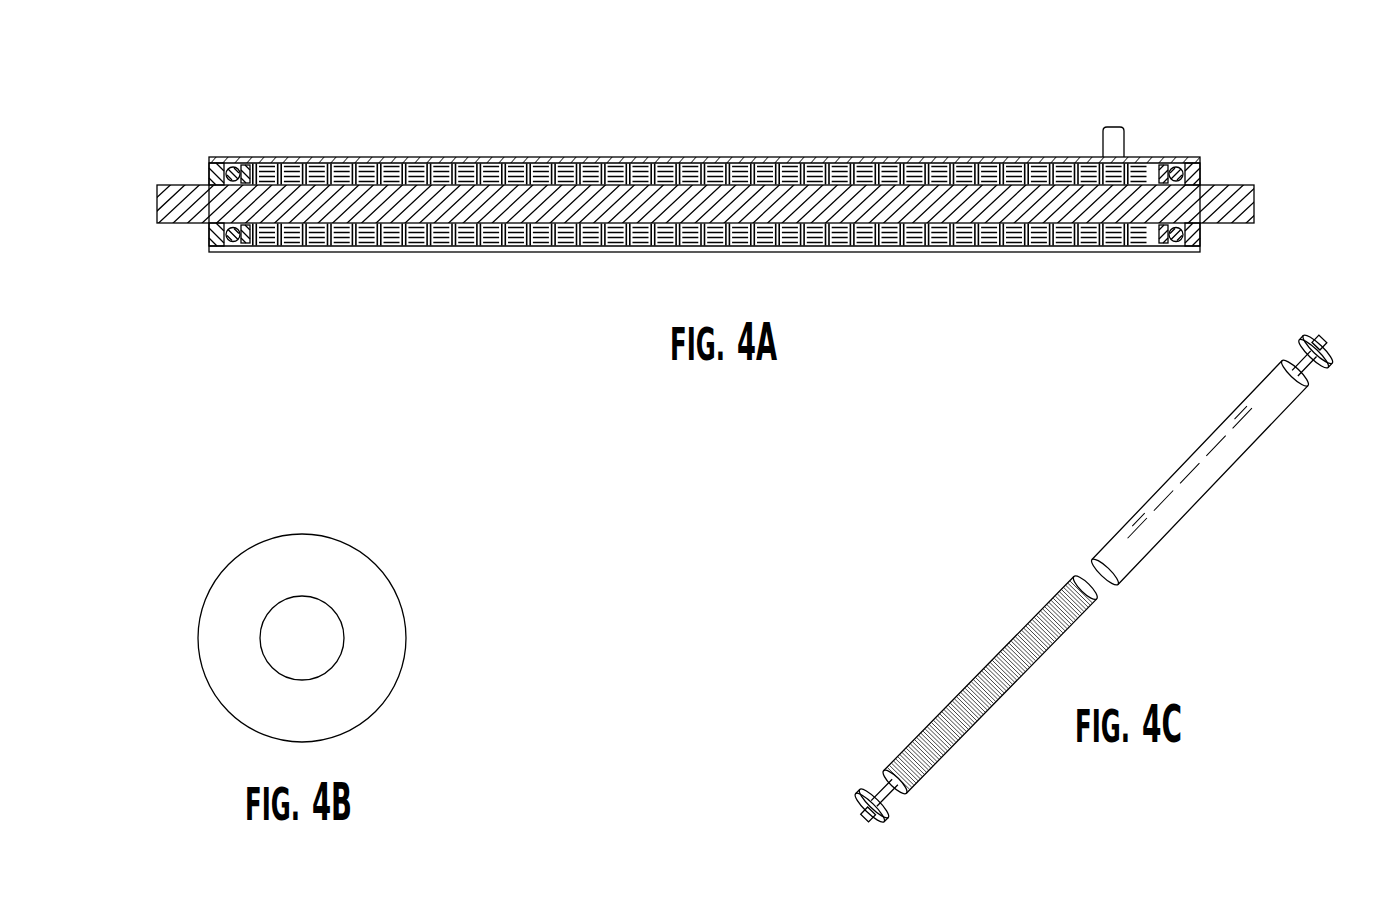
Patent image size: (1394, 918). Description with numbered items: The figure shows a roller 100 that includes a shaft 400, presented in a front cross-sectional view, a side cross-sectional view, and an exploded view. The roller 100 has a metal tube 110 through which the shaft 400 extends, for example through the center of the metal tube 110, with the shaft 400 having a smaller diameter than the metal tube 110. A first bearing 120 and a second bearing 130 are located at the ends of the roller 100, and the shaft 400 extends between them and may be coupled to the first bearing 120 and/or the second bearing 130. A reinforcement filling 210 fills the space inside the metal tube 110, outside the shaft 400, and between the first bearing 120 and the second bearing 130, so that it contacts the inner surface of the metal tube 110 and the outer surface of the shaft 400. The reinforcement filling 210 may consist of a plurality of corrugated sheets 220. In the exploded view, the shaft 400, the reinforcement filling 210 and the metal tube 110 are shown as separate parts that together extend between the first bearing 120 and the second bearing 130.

In FIG. 4A, the roller 100 is at (49, 63).
In FIG. 4A, the metal tube 110 is at (563, 157).
In FIG. 4B, the metal tube 110 is at (272, 536).
In FIG. 4C, the metal tube 110 is at (1118, 523).
In FIG. 4A, the first bearing 120 is at (209, 176).
In FIG. 4C, the first bearing 120 is at (855, 797).
In FIG. 4A, the second bearing 130 is at (1195, 176).
In FIG. 4C, the second bearing 130 is at (1333, 360).
In FIG. 4A, the reinforcement filling 210 is at (915, 163).
In FIG. 4C, the reinforcement filling 210 is at (958, 695).
In FIG. 4A, the corrugated sheets 220 is at (1113, 127).
In FIG. 4A, the shaft 400 is at (162, 192).
In FIG. 4B, the shaft 400 is at (282, 654).
In FIG. 4C, the shaft 400 is at (1300, 354).